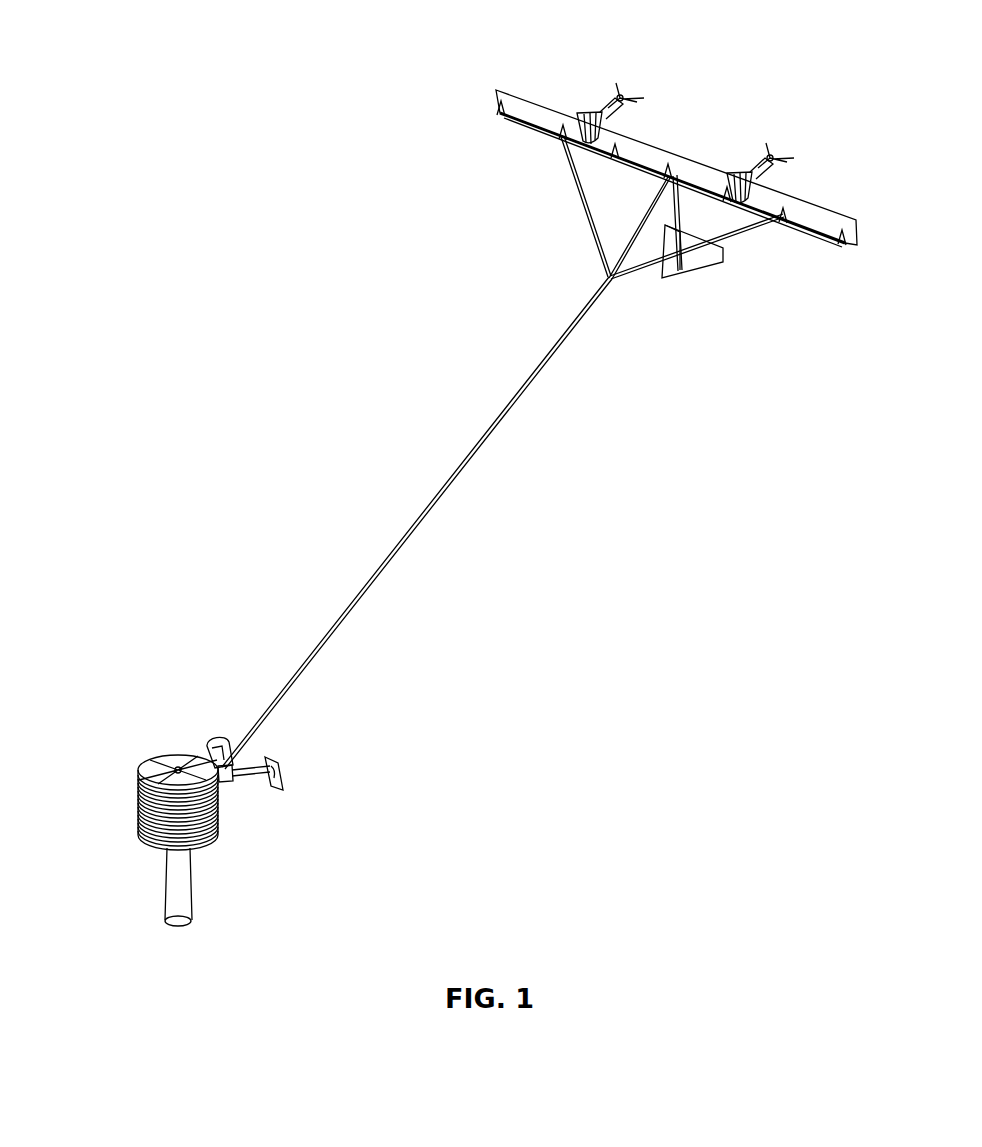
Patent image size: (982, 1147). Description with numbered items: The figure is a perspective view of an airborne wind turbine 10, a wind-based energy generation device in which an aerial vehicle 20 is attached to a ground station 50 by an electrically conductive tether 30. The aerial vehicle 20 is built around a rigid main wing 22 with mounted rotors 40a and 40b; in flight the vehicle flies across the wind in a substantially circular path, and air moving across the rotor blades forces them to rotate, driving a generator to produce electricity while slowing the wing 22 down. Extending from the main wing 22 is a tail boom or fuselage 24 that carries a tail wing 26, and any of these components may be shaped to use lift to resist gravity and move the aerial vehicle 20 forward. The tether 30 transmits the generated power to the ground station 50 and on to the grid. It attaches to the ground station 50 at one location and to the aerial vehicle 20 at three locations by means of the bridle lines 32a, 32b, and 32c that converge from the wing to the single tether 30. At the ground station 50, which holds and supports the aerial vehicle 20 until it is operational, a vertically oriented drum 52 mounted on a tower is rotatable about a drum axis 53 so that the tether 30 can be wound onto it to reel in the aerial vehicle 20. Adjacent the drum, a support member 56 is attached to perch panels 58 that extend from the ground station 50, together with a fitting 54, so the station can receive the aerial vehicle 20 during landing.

The airborne wind turbine 10 is at (300, 116).
The aerial vehicle 20 is at (700, 152).
The main wing 22 is at (810, 210).
The tail boom 24 is at (684, 204).
The tail wing 26 is at (681, 263).
The electrically conductive tether 30 is at (556, 372).
The bridle 32a is at (572, 170).
The bridle 32b is at (635, 230).
The bridle 32c is at (782, 224).
The rotor 40a is at (585, 111).
The rotor 40b is at (613, 91).
The ground station 50 is at (98, 748).
The drum 52 is at (208, 830).
The drum axis 53 is at (174, 766).
The cable guide 54 is at (239, 770).
The support members 56 is at (245, 785).
The perch panels 58 is at (216, 738).